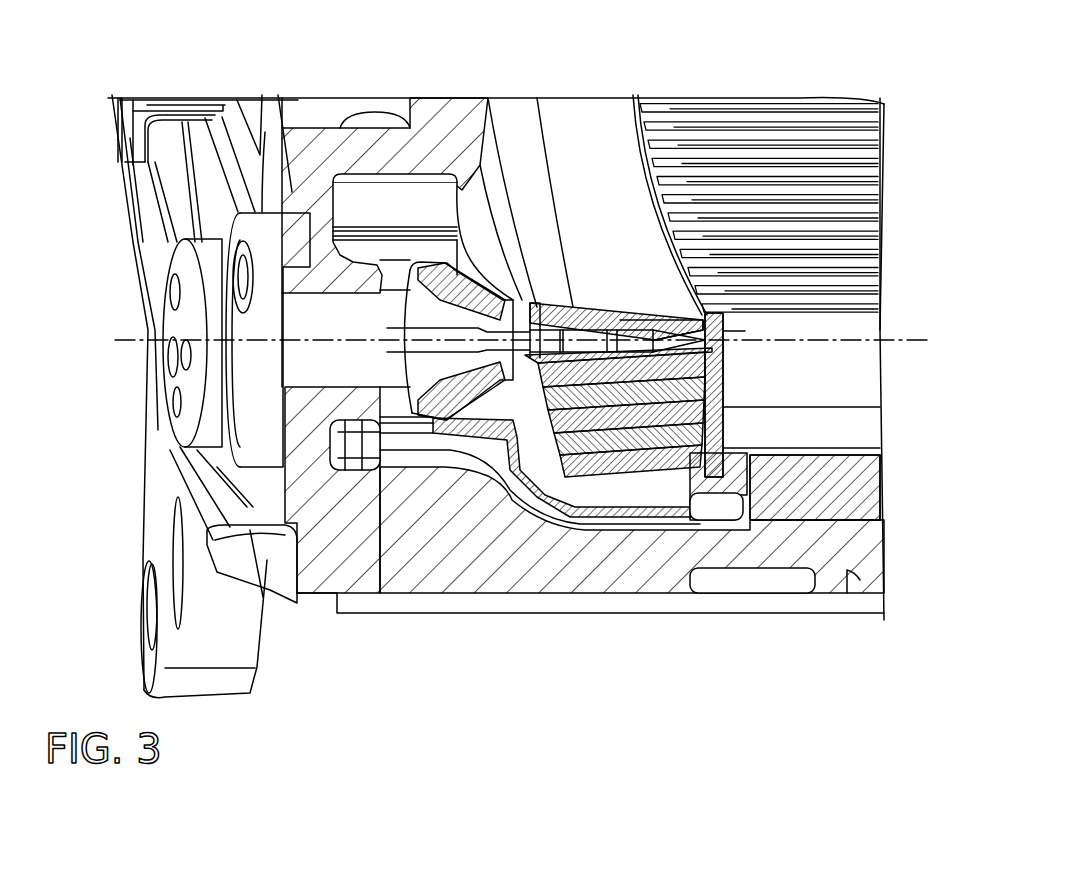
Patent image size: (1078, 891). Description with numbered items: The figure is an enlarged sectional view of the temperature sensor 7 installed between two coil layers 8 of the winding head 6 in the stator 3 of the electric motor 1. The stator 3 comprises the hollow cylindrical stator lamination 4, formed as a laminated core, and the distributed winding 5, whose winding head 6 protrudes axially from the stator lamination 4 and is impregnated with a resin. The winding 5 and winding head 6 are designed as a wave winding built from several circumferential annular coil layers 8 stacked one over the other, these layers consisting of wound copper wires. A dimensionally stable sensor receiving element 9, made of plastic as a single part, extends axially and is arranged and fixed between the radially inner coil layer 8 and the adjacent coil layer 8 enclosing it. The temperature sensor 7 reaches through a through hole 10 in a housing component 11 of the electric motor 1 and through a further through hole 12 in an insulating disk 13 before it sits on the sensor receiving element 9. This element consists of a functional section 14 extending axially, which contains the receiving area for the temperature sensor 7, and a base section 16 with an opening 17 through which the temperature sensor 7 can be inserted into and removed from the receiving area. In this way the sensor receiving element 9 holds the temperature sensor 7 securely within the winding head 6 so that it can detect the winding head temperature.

The electric motor 1 is at (116, 84).
The stator 3 is at (832, 490).
The stator lamination 4 is at (865, 465).
The winding 5 is at (714, 328).
The winding head 6 is at (619, 240).
The temperature sensor 7 is at (582, 337).
The coil layers 8 is at (590, 318).
The sensor receiving element 9 is at (536, 363).
The through hole 10 is at (313, 402).
The housing component 11 is at (312, 158).
The through hole 12 is at (508, 386).
The insulating disk 13 is at (580, 512).
The functional section 14 is at (625, 328).
The base section 16 is at (518, 300).
The opening 17 is at (526, 311).